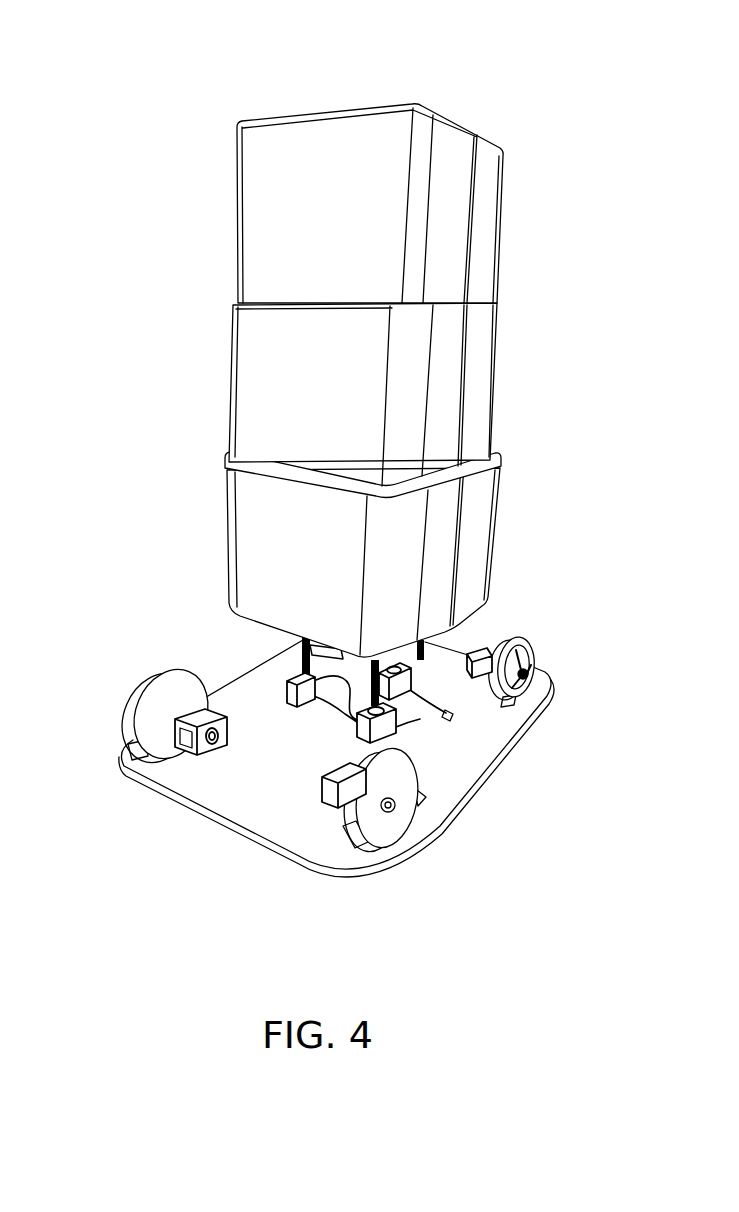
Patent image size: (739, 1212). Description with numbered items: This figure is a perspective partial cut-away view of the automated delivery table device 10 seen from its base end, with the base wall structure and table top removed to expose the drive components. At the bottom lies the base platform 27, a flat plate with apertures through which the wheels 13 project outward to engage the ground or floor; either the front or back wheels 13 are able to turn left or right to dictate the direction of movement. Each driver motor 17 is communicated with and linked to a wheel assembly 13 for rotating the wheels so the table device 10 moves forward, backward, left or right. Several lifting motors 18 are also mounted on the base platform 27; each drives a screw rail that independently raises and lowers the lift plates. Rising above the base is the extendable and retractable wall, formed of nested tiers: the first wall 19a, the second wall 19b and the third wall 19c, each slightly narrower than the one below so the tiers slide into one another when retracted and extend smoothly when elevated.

The automated delivery table device 10 is at (333, 473).
The wheels 13 is at (148, 707).
The driver motor 17 is at (491, 652).
The lifting motor 18 is at (287, 677).
The first wall 19a is at (495, 523).
The second wall 19b is at (495, 380).
The third wall 19c is at (503, 208).
The base platform 27 is at (550, 693).